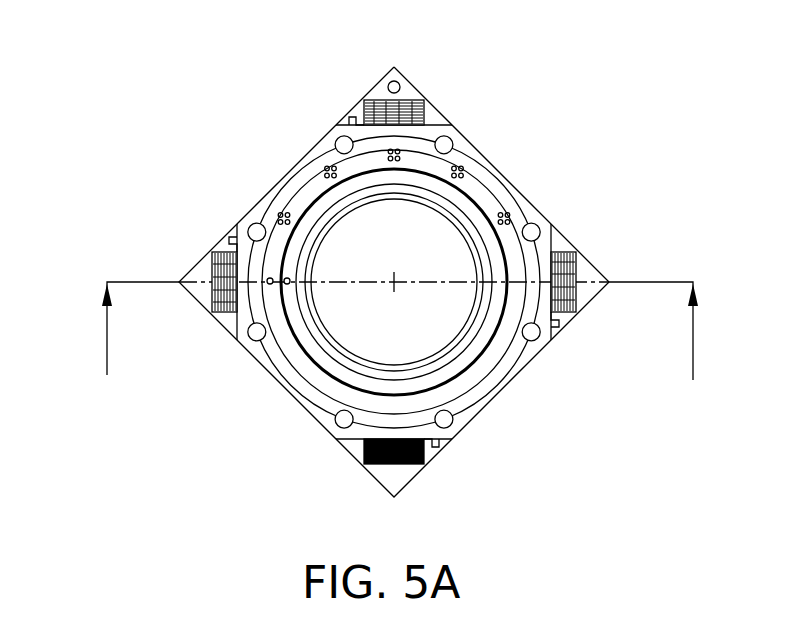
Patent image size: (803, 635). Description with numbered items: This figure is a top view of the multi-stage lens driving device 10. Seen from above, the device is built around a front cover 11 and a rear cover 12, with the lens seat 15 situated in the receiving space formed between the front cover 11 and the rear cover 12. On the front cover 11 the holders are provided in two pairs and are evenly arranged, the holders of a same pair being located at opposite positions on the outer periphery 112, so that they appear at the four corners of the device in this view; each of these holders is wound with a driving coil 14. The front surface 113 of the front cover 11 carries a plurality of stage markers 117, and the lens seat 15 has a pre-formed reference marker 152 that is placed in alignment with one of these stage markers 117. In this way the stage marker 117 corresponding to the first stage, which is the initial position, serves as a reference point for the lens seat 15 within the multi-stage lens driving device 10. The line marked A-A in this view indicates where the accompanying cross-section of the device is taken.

The multi-stage lens driving device 10 is at (200, 86).
The front cover 11 is at (258, 215).
The rear cover 12 is at (433, 116).
The driving coil 14 is at (365, 110).
The lens seat 15 is at (475, 350).
The outer periphery 112 is at (532, 206).
The front surface 113 is at (288, 350).
The stage marker 117 is at (462, 176).
The reference marker 152 is at (287, 278).